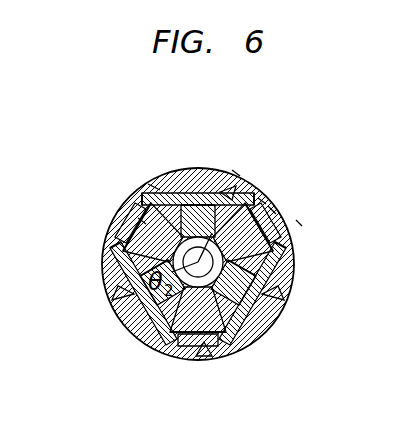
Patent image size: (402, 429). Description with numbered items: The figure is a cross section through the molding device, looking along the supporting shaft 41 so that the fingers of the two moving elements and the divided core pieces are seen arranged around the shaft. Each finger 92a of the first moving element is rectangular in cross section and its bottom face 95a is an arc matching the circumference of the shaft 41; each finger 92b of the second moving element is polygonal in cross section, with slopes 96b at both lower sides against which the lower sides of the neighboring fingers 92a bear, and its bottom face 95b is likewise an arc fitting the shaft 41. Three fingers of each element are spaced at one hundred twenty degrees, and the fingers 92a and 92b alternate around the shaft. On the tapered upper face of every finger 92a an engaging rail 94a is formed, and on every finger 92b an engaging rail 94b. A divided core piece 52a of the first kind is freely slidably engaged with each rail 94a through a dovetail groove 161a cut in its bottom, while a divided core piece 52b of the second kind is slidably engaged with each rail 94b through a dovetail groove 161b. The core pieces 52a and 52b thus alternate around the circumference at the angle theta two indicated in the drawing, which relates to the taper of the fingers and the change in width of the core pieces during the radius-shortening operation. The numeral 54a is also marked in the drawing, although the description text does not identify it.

The supporting shaft 41 is at (142, 345).
The divided core piece of the first kind 52a is at (133, 195).
The divided core piece of the second kind 52b is at (204, 172).
The permanent magnet 54a is at (262, 200).
The finger of the first moving element 92a is at (142, 180).
The finger of the second moving element 92b is at (222, 188).
The engaging rail 94a is at (128, 205).
The engaging rail 94b is at (176, 186).
The bottom face 95a is at (283, 292).
The bottom face 95b is at (225, 192).
The slope 96b is at (150, 182).
The dovetail groove 161a is at (140, 220).
The dovetail groove 161b is at (235, 172).